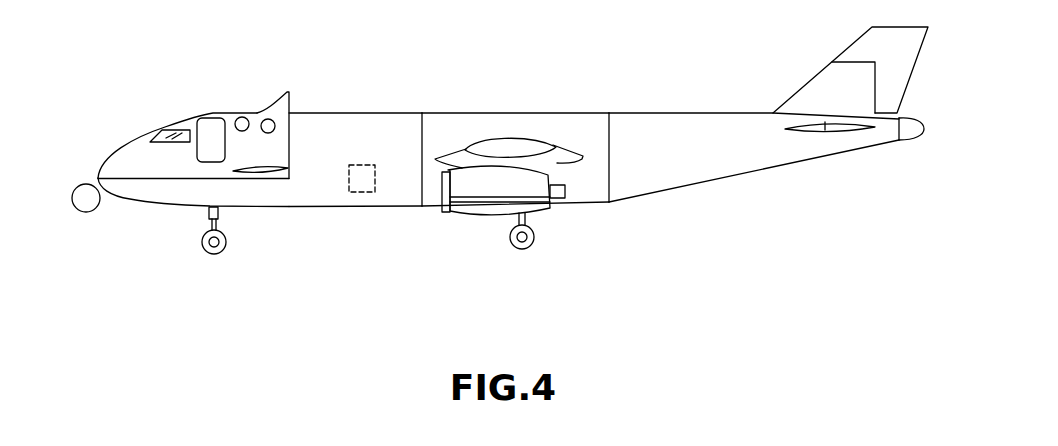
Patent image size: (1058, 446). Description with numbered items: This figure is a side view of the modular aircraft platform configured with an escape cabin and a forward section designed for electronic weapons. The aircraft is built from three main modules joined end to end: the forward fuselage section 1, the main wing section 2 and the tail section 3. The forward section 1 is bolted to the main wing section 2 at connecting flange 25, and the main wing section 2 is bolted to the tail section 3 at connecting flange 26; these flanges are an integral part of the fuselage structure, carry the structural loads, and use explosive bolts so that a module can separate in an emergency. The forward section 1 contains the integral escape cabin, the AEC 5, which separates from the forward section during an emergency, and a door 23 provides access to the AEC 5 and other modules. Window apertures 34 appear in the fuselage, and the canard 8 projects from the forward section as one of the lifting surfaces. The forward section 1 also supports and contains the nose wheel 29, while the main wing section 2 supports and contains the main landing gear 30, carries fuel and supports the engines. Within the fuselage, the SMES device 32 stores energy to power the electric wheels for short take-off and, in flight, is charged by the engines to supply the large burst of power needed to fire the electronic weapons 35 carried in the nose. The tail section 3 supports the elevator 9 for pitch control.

The forward fuselage section 1 is at (330, 130).
The main wing section 2 is at (470, 122).
The tail section 3 is at (690, 123).
The AEC 5 is at (118, 167).
The canard 8 is at (268, 172).
The elevator 9 is at (832, 131).
The door 23 is at (203, 133).
The connecting flange 25 is at (420, 133).
The connecting flange 26 is at (610, 137).
The nose wheel 29 is at (224, 248).
The main landing gear 30 is at (535, 236).
The SMES device 32 is at (364, 192).
The window aperture 34 is at (240, 117).
The electronic weapons 35 is at (92, 209).